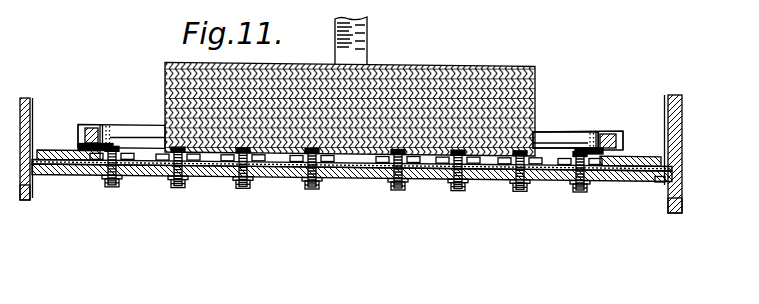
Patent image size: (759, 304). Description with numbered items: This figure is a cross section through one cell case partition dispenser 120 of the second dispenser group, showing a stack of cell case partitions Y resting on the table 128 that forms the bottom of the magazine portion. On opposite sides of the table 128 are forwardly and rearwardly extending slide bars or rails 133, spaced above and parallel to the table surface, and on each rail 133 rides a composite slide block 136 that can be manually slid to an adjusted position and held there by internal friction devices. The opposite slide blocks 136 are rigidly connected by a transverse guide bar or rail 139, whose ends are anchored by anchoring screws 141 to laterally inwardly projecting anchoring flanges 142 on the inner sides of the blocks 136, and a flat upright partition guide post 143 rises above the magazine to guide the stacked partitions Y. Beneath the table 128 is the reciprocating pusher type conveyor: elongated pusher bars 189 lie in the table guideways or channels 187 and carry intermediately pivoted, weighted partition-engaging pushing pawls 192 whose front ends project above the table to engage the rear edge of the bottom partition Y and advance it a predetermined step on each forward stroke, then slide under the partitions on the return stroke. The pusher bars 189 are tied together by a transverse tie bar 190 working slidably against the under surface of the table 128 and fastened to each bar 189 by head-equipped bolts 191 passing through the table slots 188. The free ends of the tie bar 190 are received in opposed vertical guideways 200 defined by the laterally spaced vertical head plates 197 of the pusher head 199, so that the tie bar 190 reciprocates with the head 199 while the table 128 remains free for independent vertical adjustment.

The cell case partition Y is at (498, 92).
The cell case partition dispenser 120 is at (553, 130).
The table 128 is at (616, 181).
The slide bars or rails 133 is at (92, 127).
The composite slide blocks 136 is at (78, 127).
The transverse guide bar or rail 139 is at (143, 127).
The anchoring screws 141 is at (108, 128).
The anchoring flanges 142 is at (111, 145).
The flat upright partition guide post 143 is at (350, 52).
The table guideways or channels 187 is at (104, 180).
The table slots 188 is at (130, 182).
The pusher bar 189 is at (164, 160).
The transverse tie bar 190 is at (68, 176).
The head-equipped bolts 191 is at (240, 187).
The partition-engaging pushing pawls 192 is at (98, 146).
The head plates 197 is at (16, 205).
The pusher head 199 is at (30, 96).
The vertical guideways 200 is at (30, 199).